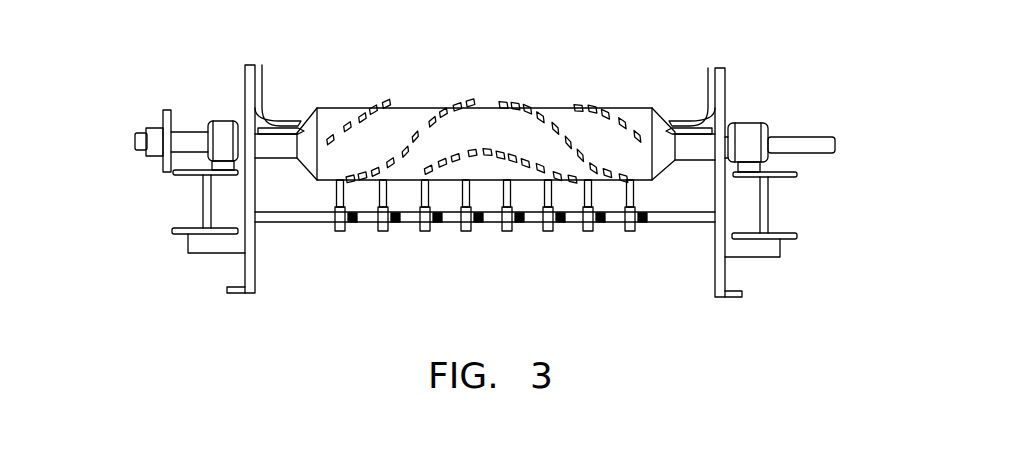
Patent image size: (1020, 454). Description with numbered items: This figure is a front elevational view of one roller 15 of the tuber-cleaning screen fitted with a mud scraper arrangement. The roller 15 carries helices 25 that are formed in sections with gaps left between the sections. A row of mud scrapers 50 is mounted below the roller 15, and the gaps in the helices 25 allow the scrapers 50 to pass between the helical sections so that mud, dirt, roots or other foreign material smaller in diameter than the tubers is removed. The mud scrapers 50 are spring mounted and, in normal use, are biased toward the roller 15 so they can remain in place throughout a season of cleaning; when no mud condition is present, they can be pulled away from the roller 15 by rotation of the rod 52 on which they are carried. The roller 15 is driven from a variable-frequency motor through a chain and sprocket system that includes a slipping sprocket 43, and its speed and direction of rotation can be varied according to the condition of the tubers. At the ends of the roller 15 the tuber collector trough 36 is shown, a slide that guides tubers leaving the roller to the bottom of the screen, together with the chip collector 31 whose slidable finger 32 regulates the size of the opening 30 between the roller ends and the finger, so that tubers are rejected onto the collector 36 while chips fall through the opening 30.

The roller 15 is at (330, 108).
The helices 25 is at (375, 106).
The opening 30 is at (710, 105).
The chip collector 31 is at (702, 156).
The slidable finger 32 is at (667, 122).
The tuber collector trough 36 is at (260, 93).
The slipping sprocket 43 is at (163, 165).
The mud scrapers 50 is at (425, 182).
The rod 52 is at (280, 221).